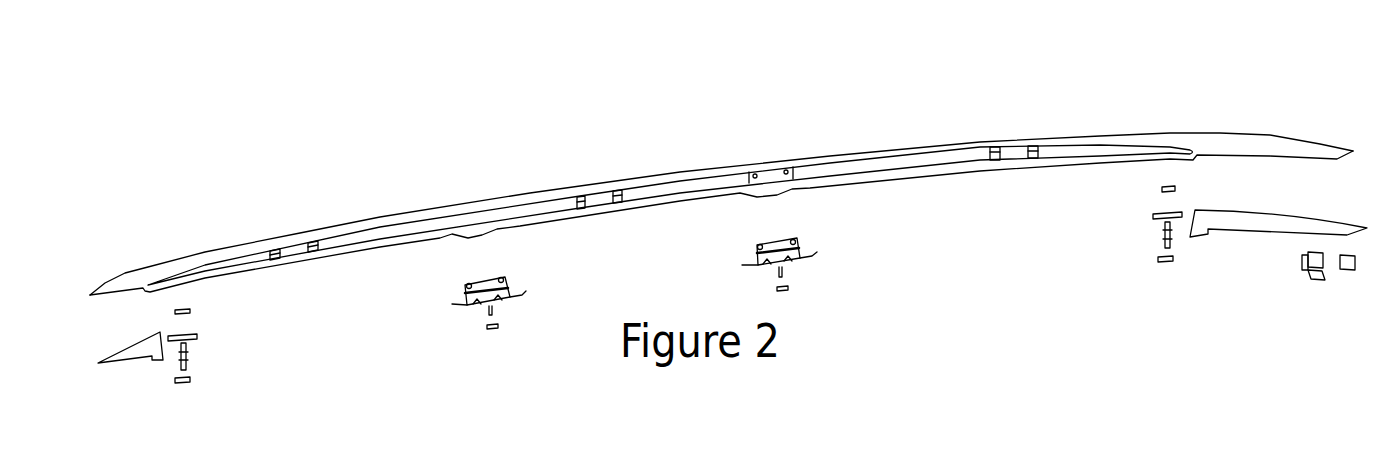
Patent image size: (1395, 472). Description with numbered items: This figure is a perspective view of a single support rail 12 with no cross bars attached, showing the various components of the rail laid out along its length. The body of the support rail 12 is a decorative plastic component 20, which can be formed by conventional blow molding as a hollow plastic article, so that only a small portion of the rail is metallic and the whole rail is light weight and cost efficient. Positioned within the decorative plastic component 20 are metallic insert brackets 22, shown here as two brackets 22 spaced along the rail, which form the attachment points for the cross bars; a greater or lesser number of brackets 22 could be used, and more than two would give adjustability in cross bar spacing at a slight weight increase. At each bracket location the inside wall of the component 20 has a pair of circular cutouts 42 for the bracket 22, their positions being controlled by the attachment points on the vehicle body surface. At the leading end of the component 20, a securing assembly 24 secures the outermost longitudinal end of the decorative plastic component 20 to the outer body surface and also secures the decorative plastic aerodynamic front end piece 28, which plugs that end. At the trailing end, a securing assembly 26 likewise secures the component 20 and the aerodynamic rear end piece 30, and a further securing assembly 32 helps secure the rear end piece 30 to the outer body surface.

The support rail 12 is at (563, 133).
The decorative plastic component 20 is at (485, 190).
The metallic insert bracket 22 is at (510, 318).
The securing assembly 24 is at (198, 302).
The securing assembly 26 is at (1148, 182).
The front end piece 28 is at (113, 358).
The rear end piece 30 is at (1257, 227).
The securing assembly 32 is at (1367, 278).
The circular cutouts 42 is at (755, 173).